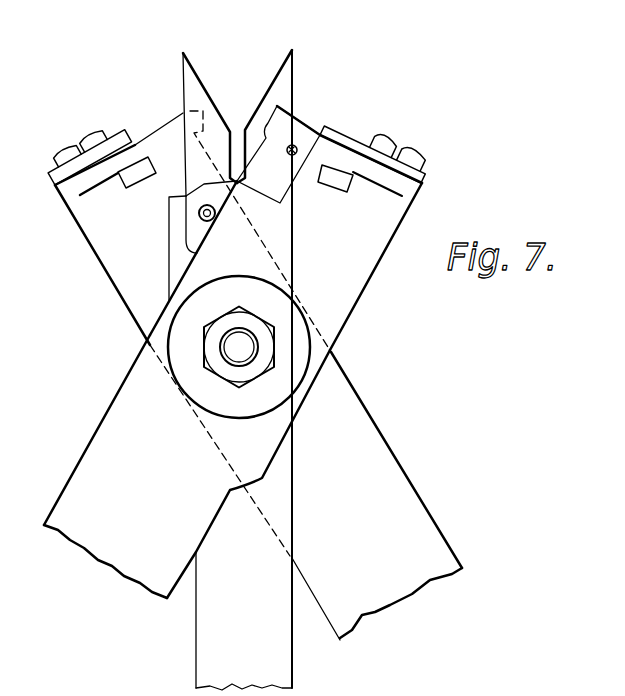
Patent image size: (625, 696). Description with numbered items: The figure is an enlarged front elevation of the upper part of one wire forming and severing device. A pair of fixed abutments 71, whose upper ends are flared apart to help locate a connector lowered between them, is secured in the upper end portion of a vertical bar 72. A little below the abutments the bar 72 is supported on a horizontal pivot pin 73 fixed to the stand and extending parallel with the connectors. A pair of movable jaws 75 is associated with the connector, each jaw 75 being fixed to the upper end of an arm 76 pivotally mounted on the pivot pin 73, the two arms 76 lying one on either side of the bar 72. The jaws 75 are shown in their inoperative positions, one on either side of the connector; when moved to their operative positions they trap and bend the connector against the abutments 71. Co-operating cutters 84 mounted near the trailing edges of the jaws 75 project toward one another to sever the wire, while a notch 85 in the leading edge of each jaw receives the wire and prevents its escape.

The fixed abutments 71 is at (266, 93).
The bar 72 is at (205, 634).
The pivot pin 73 is at (246, 342).
The movable jaws 75 is at (156, 138).
The arm 76 is at (110, 421).
The cutters 84 is at (132, 185).
The notch 85 is at (270, 128).